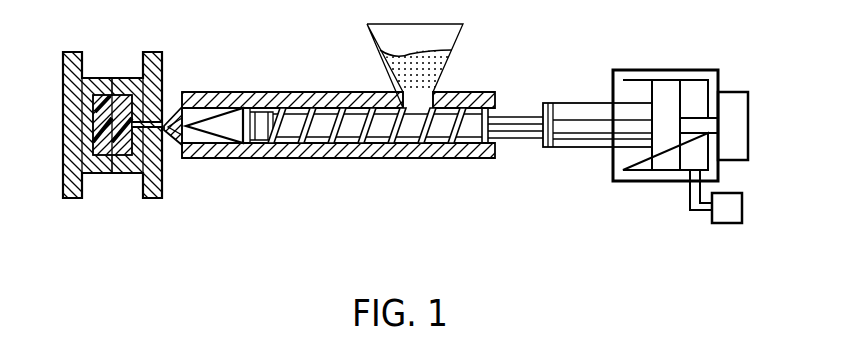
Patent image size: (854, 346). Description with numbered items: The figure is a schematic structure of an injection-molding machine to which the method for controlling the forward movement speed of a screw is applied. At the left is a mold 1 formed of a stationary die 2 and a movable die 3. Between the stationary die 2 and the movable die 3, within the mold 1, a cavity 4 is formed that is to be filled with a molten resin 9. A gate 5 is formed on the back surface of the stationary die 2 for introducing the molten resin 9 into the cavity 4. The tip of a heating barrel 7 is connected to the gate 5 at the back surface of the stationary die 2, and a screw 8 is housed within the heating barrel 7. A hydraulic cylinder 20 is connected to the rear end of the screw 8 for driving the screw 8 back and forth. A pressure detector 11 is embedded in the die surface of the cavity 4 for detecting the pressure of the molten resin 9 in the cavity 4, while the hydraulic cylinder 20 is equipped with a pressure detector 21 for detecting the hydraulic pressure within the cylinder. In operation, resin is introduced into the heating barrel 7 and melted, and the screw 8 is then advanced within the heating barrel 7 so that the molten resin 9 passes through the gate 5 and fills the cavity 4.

The mold 1 is at (92, 170).
The stationary die 2 is at (120, 176).
The movable die 3 is at (95, 176).
The cavity 4 is at (74, 108).
The pressure detector 11 is at (78, 147).
The gate 5 is at (152, 120).
The heating barrel 7 is at (363, 158).
The screw 8 is at (307, 145).
The molten resin 9 is at (212, 145).
The hydraulic cylinder 20 is at (628, 182).
The pressure detector 21 is at (720, 225).